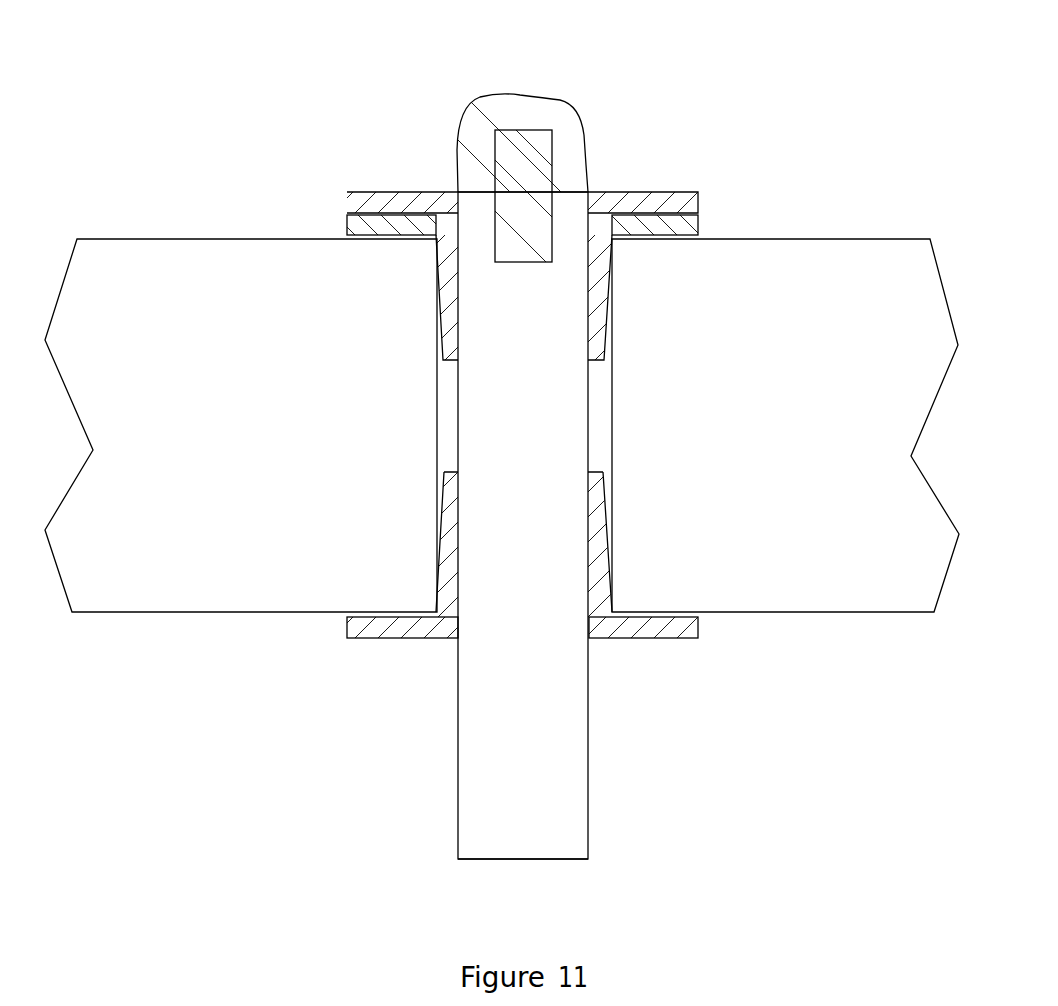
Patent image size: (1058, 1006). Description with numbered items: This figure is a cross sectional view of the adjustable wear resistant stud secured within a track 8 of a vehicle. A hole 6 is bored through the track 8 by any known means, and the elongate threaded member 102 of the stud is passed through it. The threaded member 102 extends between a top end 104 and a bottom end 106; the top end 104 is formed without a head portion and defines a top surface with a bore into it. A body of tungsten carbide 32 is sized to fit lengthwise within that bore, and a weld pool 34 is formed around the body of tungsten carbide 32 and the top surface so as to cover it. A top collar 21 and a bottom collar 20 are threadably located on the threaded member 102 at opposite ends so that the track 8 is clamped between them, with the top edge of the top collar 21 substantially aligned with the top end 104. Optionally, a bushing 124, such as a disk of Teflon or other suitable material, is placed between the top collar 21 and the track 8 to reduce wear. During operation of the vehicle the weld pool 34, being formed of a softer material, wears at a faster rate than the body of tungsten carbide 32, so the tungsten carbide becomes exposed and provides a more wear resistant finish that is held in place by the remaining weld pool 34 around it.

The hole 6 is at (616, 424).
The track 8 is at (911, 239).
The bottom collar 20 is at (402, 640).
The top collar 21 is at (688, 192).
The body of tungsten carbide 32 is at (510, 128).
The weld pool 34 is at (542, 100).
The threaded member 102 is at (590, 792).
The top end 104 is at (590, 192).
The bottom end 106 is at (457, 860).
The bushing 124 is at (698, 225).